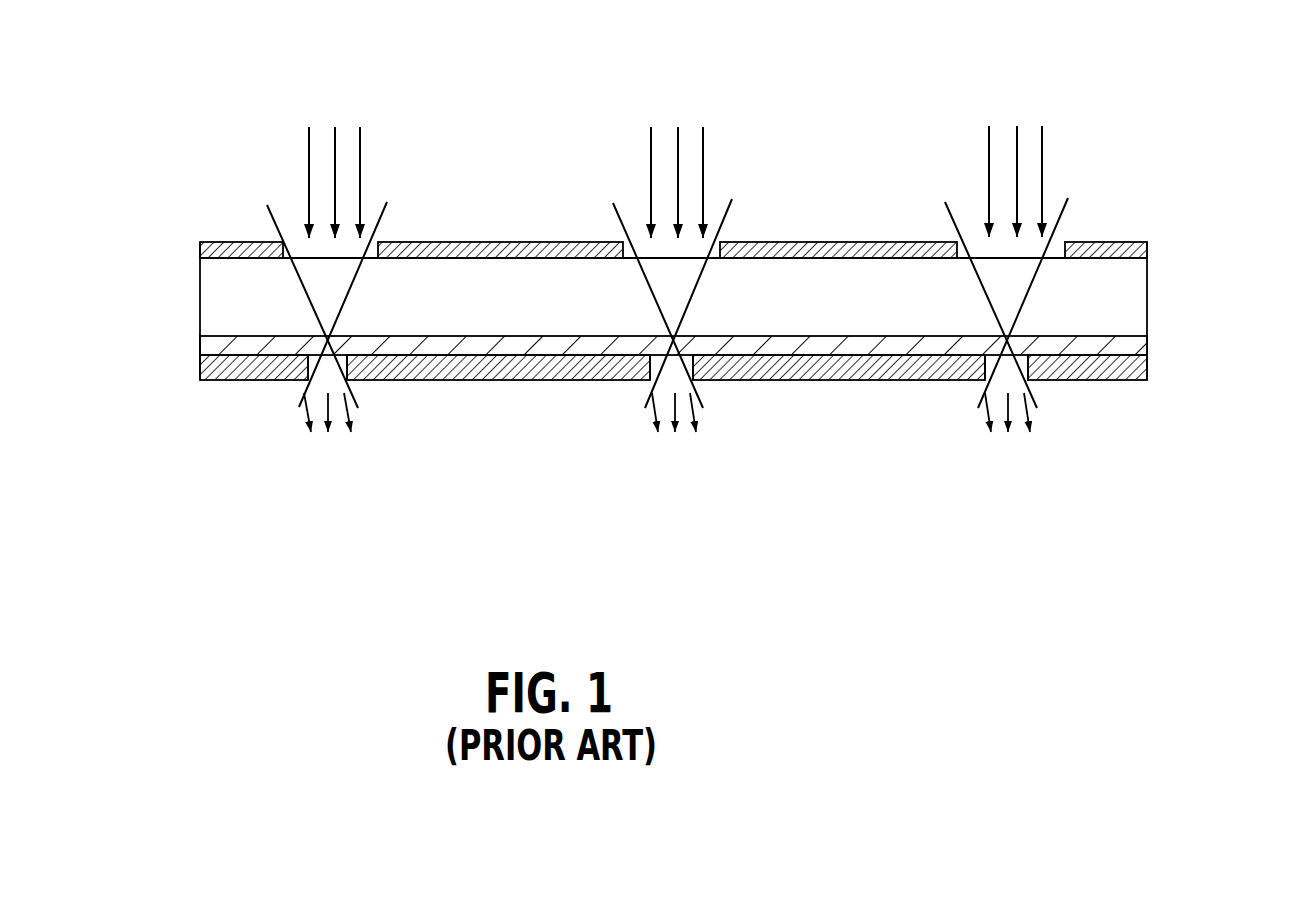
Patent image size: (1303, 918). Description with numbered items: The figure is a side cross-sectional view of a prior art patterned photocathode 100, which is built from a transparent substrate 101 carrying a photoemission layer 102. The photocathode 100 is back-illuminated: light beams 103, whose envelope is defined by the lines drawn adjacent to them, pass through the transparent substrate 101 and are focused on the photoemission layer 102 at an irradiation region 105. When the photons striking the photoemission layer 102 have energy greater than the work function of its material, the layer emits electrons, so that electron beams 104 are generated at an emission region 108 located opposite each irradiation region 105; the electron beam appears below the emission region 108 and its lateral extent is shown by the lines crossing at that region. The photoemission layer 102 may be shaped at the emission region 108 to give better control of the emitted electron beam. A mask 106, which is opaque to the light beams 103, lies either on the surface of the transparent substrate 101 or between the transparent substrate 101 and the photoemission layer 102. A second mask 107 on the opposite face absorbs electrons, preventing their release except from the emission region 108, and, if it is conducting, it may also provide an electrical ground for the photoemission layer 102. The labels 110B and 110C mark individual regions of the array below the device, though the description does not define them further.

The photocathode 100 is at (1167, 74).
The transparent substrate 101 is at (1138, 270).
The photoemission layer 102 is at (200, 342).
The light beams 103 is at (666, 110).
The electron beams 104 is at (664, 445).
The irradiation region 105 is at (333, 326).
The mask 106 is at (198, 242).
The mask 107 is at (1137, 386).
The emission region 108 is at (327, 363).
The pixel region B 110B is at (678, 453).
The pixel region C 110C is at (1098, 438).